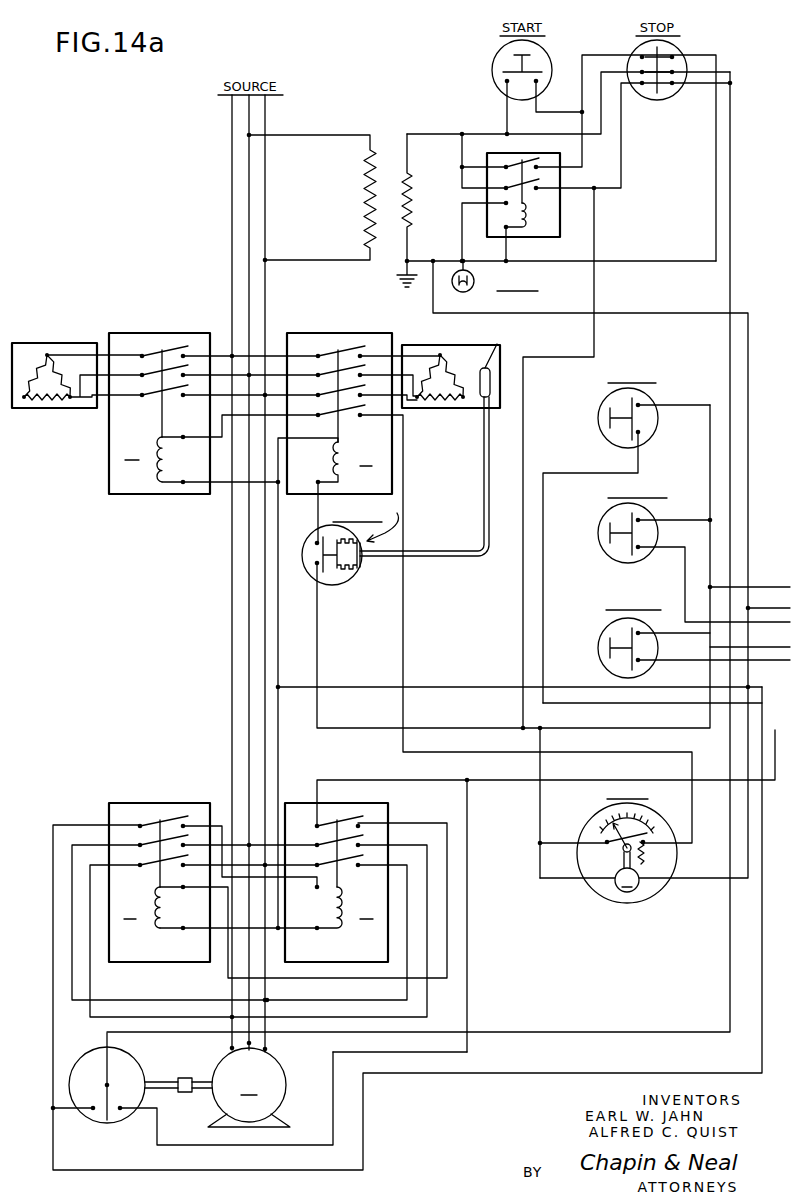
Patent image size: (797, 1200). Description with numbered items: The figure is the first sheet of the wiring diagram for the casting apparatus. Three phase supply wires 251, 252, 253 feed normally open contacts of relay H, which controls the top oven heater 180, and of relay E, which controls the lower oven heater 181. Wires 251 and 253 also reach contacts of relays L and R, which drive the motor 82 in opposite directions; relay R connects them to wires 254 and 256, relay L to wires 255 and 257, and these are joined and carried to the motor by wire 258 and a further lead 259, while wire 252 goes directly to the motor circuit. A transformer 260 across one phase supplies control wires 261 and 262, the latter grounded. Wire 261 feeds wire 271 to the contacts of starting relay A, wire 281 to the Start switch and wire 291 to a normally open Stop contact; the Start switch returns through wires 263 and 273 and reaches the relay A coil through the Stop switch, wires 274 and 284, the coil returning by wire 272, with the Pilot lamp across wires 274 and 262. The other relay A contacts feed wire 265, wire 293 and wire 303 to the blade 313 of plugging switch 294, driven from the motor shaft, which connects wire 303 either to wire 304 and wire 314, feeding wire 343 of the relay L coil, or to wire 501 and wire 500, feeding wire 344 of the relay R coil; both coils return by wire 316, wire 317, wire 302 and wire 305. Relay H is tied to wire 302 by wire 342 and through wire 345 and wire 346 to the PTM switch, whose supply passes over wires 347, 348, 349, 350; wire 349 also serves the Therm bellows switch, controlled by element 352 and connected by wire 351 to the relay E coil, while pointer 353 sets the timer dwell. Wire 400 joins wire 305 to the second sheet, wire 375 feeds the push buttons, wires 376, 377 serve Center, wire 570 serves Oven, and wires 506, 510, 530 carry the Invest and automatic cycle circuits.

The motor 82 is at (286, 1083).
The top oven heater 180 is at (38, 352).
The lower oven heater 181 is at (450, 328).
The supply wire 251 is at (232, 148).
The supply wire 252 is at (249, 172).
The supply wire 253 is at (265, 197).
The wire 254 is at (398, 830).
The wire 255 is at (98, 832).
The wire 256 is at (426, 852).
The wire 257 is at (110, 852).
The wire 258 is at (230, 1045).
The motor lead 259 is at (266, 1045).
The transformer 260 is at (352, 201).
The transformer wire 261 is at (437, 112).
The return wire 262 is at (416, 254).
The wire 263 is at (578, 112).
The wire 265 is at (622, 127).
The wire 271 is at (461, 148).
The wire 272 is at (461, 212).
The wire 273 is at (604, 48).
The wire 274 is at (716, 56).
The wire 281 is at (506, 115).
The wire 284 is at (507, 250).
The wire 291 is at (588, 140).
The wire 293 is at (708, 96).
The plugging switch 294 is at (96, 1028).
The wire 302 is at (294, 448).
The wire 303 is at (731, 113).
The wire 304 is at (468, 800).
The return wire 305 is at (500, 298).
The movable switch blade 313 is at (106, 1086).
The wire 314 is at (773, 714).
The wire 316 is at (196, 932).
The wire 317 is at (279, 743).
The wire 342 is at (228, 486).
The wire 343 is at (207, 895).
The wire 344 is at (294, 898).
The wire 345 is at (202, 426).
The wire 346 is at (406, 444).
The wire 347 is at (540, 837).
The wire 348 is at (541, 740).
The wire 349 is at (318, 608).
The wire 350 is at (597, 203).
The wire 351 is at (317, 512).
The thermal element 352 is at (505, 328).
The adjustable pointer 353 is at (614, 847).
The wire 375 is at (763, 572).
The wire 376 is at (710, 428).
The wire 377 is at (700, 505).
The wire 400 is at (763, 595).
The wire 500 is at (793, 675).
The wire 501 is at (68, 1112).
The wire 506 is at (669, 532).
The wire 510 is at (765, 694).
The wire 530 is at (660, 656).
The conductor 570 is at (618, 468).